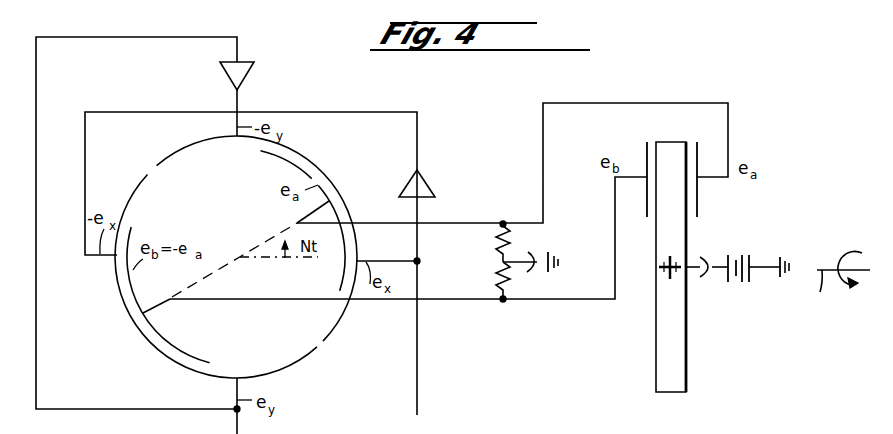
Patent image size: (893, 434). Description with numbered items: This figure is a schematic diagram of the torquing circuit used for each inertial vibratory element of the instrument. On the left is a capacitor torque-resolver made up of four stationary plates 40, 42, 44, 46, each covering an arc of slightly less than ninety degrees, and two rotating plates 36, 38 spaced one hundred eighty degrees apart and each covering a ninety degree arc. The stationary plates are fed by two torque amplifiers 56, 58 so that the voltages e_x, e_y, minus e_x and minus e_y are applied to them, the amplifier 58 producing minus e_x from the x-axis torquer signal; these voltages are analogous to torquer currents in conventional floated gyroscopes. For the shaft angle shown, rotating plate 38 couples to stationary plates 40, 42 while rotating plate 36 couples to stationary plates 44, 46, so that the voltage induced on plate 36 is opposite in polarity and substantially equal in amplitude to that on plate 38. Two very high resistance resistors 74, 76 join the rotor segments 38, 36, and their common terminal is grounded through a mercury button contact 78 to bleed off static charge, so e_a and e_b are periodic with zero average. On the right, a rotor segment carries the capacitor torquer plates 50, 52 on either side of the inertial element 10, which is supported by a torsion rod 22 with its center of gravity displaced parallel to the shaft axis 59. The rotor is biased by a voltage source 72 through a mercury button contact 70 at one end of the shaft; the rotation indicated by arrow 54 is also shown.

The sensing element 10 is at (680, 226).
The torsion rod 22 is at (664, 283).
The rotating plate 36 is at (190, 354).
The rotating plate 38 is at (292, 161).
The stationary plate 40 is at (306, 157).
The stationary plate 42 is at (333, 333).
The stationary plate 44 is at (288, 368).
The stationary plate 46 is at (129, 309).
The capacitor torquer plate 50 is at (645, 205).
The capacitor torquer plate 52 is at (699, 200).
The torque / rotation direction 54 is at (258, 258).
The torque amplifier 56 is at (252, 72).
The torque amplifier 58 is at (430, 192).
The axis 59 is at (835, 297).
The mercury button contact 70 is at (709, 278).
The voltage source 72 is at (743, 284).
The resistor 74 is at (501, 223).
The resistor 76 is at (502, 289).
The mercury button contact 78 is at (536, 273).